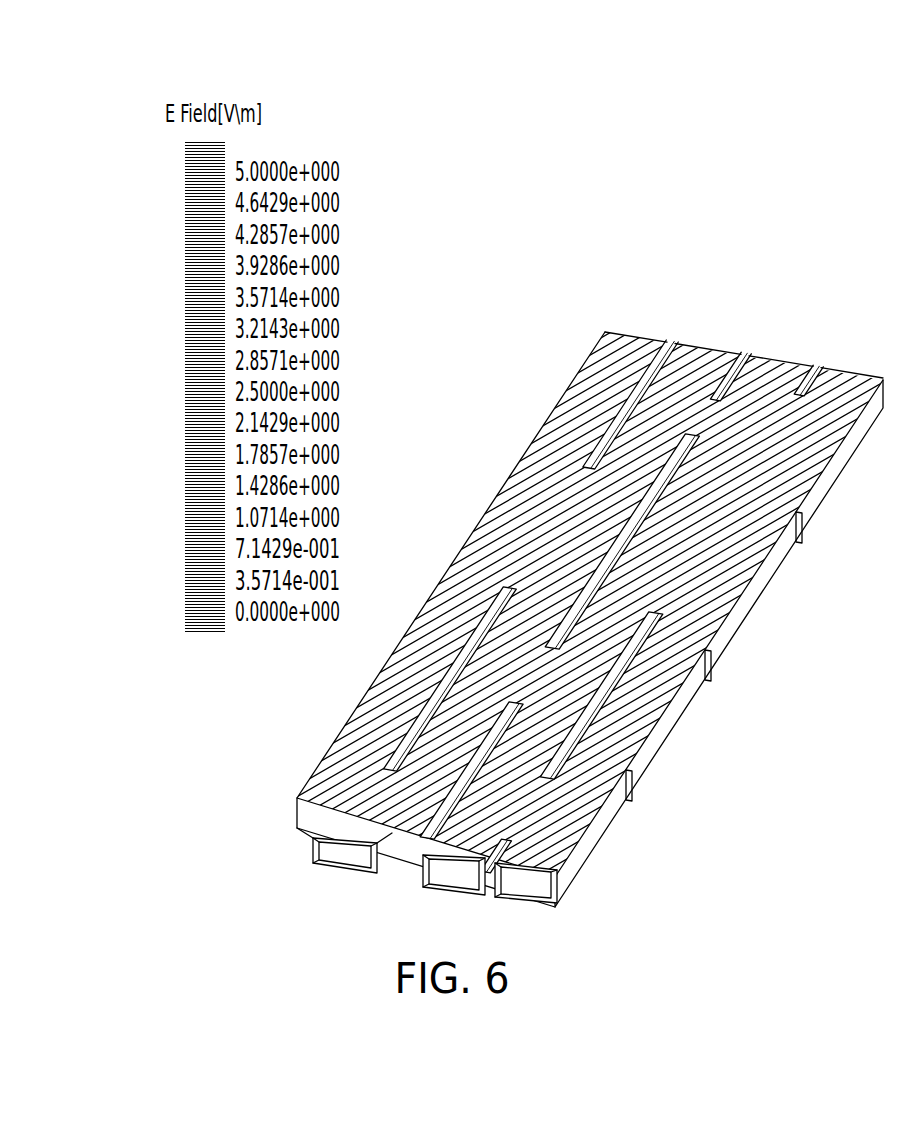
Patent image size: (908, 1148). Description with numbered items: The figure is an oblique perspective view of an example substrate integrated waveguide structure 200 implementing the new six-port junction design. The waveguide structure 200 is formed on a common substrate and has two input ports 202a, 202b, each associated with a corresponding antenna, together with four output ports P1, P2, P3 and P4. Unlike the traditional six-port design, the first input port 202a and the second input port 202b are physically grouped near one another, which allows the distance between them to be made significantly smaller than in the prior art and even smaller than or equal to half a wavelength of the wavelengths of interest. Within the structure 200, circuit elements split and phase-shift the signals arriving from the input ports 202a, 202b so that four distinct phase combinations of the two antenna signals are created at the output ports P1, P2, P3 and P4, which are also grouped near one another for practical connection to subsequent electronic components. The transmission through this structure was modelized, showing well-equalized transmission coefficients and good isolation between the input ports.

The six-port junction design 200 is at (530, 321).
The output port P1 is at (644, 333).
The output port P2 is at (718, 344).
The output port P3 is at (783, 355).
The output port P4 is at (846, 367).
The first input port 202a is at (352, 862).
The second input port 202b is at (465, 880).